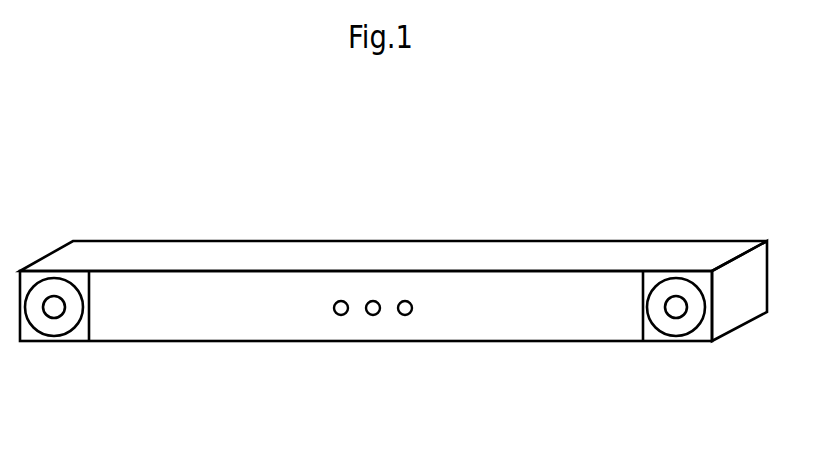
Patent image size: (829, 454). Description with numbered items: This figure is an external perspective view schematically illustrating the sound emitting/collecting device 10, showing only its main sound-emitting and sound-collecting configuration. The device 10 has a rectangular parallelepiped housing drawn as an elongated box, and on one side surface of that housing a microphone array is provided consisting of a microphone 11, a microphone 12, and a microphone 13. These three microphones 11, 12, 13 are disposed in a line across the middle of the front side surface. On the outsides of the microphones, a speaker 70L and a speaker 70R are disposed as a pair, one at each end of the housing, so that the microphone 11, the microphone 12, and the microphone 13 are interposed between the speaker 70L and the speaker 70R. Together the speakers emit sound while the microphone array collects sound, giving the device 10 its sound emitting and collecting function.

The sound emitting/collecting device 10 is at (463, 170).
The microphone 11 is at (341, 315).
The microphone 12 is at (373, 315).
The microphone 13 is at (405, 315).
The speaker 70L is at (62, 334).
The speaker 70R is at (688, 334).